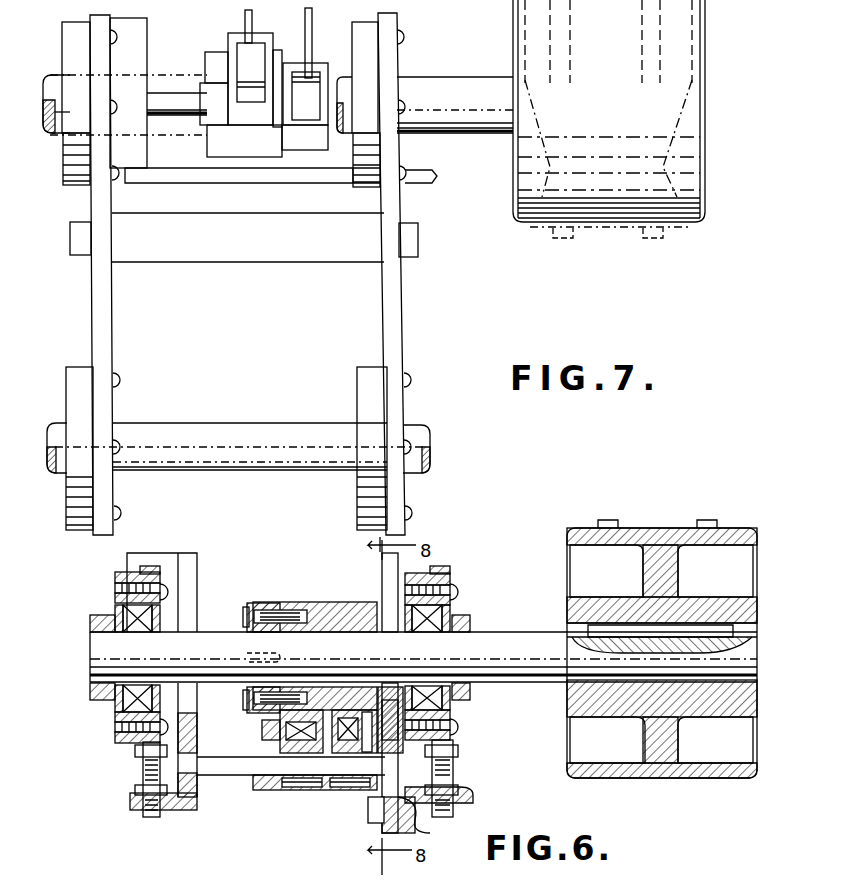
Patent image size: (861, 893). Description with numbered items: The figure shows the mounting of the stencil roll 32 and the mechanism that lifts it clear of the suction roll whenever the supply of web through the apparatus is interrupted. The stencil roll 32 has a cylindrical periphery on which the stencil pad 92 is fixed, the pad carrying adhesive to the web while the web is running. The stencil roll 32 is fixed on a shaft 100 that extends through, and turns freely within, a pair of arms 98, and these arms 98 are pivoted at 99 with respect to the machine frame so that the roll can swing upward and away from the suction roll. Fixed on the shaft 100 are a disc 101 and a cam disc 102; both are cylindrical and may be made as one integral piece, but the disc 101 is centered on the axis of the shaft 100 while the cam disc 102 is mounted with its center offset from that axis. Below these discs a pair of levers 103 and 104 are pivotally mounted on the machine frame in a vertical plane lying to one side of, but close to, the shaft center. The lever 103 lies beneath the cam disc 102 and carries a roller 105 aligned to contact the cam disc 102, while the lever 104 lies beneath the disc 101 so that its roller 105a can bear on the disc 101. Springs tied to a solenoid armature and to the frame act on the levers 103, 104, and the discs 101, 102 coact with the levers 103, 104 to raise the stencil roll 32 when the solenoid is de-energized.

In FIG. 7, the stencil roll 32 is at (625, 227).
In FIG. 6, the stencil roll 32 is at (663, 778).
In FIG. 7, the stencil pad 92 is at (687, 230).
In FIG. 6, the stencil pad 92 is at (737, 530).
In FIG. 7, the arms 98 is at (102, 317).
In FIG. 7, the pivot 99 is at (403, 410).
In FIG. 7, the shaft 100 is at (448, 133).
In FIG. 6, the shaft 100 is at (508, 685).
In FIG. 6, the disc 101 is at (315, 697).
In FIG. 6, the cam disc 102 is at (380, 703).
In FIG. 7, the lever 103 is at (323, 67).
In FIG. 6, the lever 103 is at (373, 742).
In FIG. 7, the lever 104 is at (233, 50).
In FIG. 6, the lever 104 is at (290, 730).
In FIG. 6, the roller 105 is at (355, 738).
In FIG. 6, the roller 105a is at (280, 732).